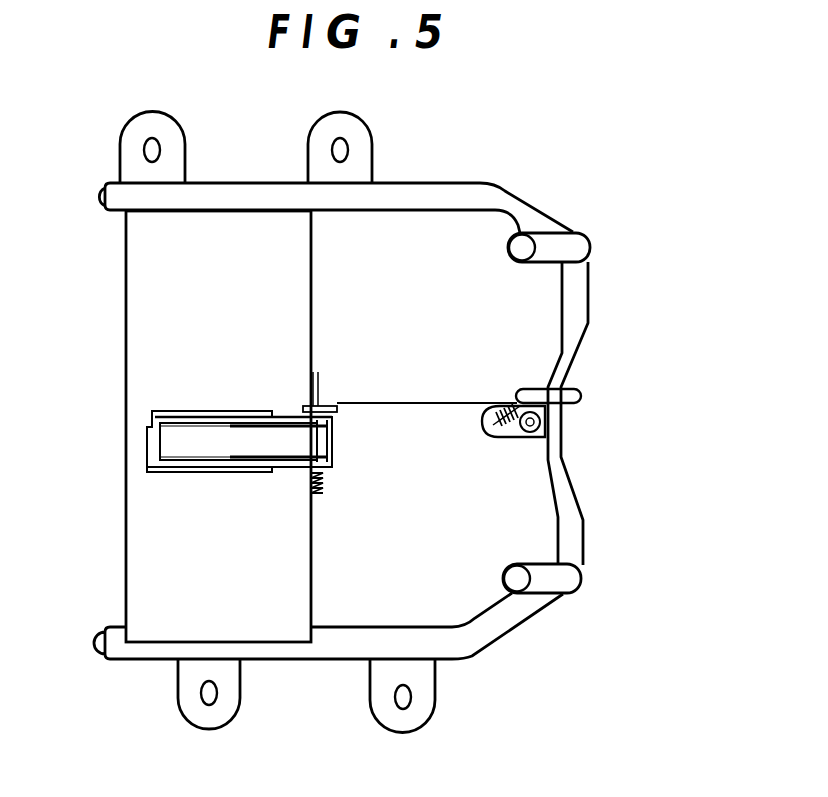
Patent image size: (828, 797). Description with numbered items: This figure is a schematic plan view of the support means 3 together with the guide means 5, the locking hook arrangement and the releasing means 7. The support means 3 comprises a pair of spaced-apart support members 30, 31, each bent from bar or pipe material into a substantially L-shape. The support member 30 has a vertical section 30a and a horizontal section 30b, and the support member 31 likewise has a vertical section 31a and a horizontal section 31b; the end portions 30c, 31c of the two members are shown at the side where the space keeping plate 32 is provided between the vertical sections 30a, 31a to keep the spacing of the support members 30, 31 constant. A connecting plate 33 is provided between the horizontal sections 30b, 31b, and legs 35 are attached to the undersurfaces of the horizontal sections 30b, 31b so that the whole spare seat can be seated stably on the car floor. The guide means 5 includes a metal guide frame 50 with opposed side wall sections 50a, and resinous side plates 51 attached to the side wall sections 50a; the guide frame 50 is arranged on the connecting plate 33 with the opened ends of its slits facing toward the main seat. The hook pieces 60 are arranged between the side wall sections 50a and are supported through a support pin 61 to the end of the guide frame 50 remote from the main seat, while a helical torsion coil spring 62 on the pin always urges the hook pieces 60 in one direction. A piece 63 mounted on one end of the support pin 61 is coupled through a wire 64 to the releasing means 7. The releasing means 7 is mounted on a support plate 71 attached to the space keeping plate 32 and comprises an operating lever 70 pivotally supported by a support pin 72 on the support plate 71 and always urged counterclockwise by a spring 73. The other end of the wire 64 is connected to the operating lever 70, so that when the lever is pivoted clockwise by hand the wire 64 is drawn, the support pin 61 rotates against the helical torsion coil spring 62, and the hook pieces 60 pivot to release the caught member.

The support means 3 is at (350, 409).
The guide means 5 is at (287, 434).
The releasing means 7 is at (538, 423).
The support member 30 is at (365, 647).
The vertical section 30a is at (500, 618).
The horizontal section 30b is at (350, 640).
The lower hinge pin portion 30c is at (542, 580).
The support member 31 is at (366, 186).
The vertical section 31a is at (521, 213).
The horizontal section 31b is at (410, 210).
The upper hinge pin portion 31c is at (566, 240).
The space keeping plate 32 is at (573, 320).
The connecting plate 33 is at (128, 345).
The legs 35 is at (165, 137).
The guide frame 50 is at (194, 444).
The side wall sections 50a is at (290, 415).
The side plates 51 is at (213, 411).
The hook pieces 60 is at (335, 442).
The support pin 61 is at (320, 406).
The helical torsion coil spring 62 is at (326, 487).
The piece 63 is at (321, 385).
The wire 64 is at (410, 403).
The operating lever 70 is at (580, 396).
The support plate 71 is at (497, 421).
The support pin 72 is at (530, 437).
The spring 73 is at (500, 406).